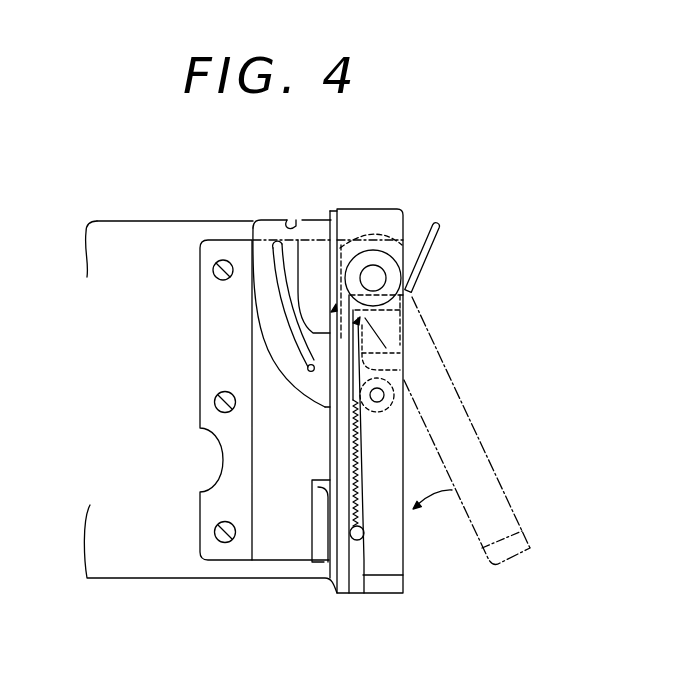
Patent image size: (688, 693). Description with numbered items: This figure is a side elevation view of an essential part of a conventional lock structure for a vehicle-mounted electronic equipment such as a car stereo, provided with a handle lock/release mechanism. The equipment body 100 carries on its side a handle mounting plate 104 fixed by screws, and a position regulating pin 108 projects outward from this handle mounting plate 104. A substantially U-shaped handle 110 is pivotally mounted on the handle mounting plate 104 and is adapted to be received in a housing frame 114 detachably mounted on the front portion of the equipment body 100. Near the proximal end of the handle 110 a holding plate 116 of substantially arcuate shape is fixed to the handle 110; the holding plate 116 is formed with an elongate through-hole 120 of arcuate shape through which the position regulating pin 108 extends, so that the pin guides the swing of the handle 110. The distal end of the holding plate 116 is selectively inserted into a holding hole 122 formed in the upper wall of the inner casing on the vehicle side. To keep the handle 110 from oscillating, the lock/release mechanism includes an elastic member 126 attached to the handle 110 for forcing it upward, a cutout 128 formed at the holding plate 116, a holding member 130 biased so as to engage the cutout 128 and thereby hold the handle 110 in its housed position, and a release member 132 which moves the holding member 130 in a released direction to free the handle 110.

The equipment body 100 is at (153, 228).
The handle mounting plate 104 is at (285, 340).
The position regulating pin 108 is at (296, 499).
The handle 110 is at (400, 533).
The housing frame 114 is at (395, 208).
The holding plate 116 is at (257, 293).
The elongate through-hole 120 is at (259, 346).
The holding hole 122 is at (300, 217).
The elastic member 126 is at (358, 500).
The cutout 128 is at (336, 230).
The holding member 130 is at (337, 355).
The release member 132 is at (441, 249).